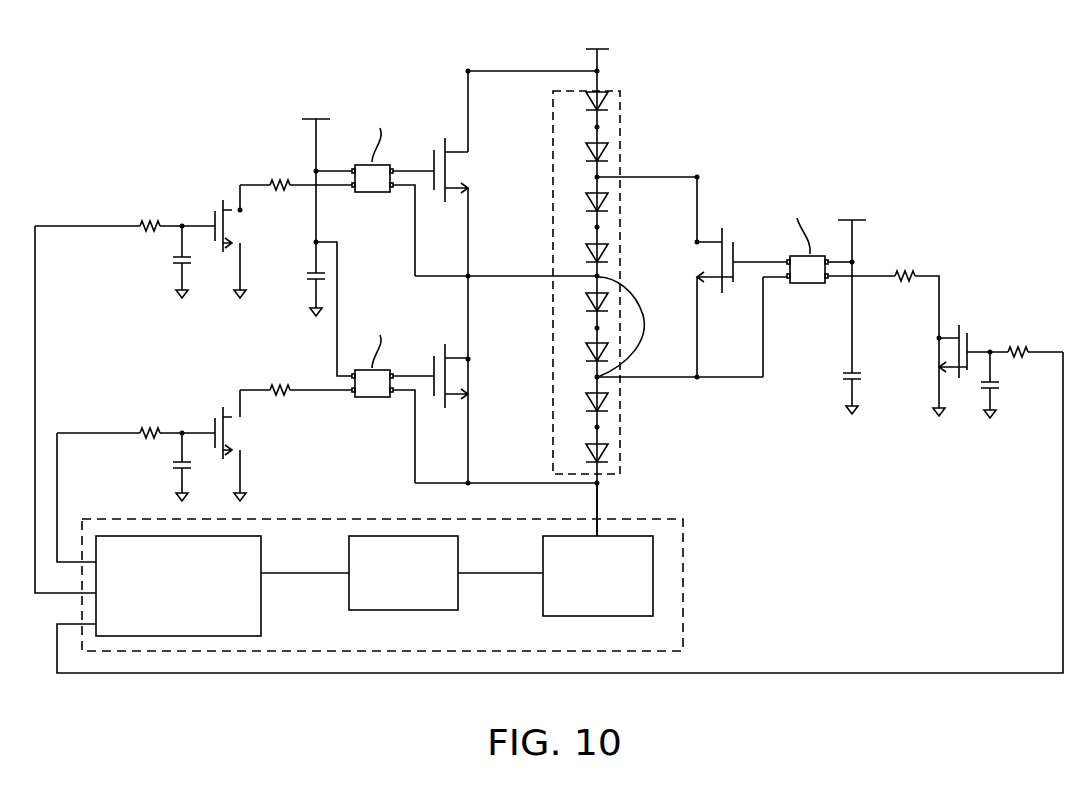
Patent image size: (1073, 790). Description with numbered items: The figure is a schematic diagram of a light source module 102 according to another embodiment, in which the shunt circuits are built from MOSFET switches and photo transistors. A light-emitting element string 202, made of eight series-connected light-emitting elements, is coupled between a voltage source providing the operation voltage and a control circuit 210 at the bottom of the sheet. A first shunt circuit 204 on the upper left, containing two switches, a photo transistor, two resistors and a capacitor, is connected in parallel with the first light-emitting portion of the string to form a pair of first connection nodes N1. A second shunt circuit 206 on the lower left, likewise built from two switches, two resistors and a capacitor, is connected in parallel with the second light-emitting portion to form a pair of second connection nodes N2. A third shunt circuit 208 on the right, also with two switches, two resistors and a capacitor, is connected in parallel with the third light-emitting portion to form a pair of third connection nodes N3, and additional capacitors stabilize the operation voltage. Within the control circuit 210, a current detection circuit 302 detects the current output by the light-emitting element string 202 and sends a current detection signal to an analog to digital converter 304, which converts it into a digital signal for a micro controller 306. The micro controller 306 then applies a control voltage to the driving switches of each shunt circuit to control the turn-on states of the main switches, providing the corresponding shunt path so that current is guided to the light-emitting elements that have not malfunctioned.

The light source module 102 is at (1031, 747).
The light-emitting element string 202 is at (552, 148).
The first shunt circuit 204 is at (179, 161).
The second shunt circuit 206 is at (190, 374).
The third shunt circuit 208 is at (947, 217).
The control circuit 210 is at (683, 560).
The current detection circuit 302 is at (597, 616).
The analog to digital converter 304 is at (403, 610).
The micro controller 306 is at (183, 636).
The first connection nodes N1 is at (598, 277).
The second connection nodes N2 is at (598, 483).
The third connection nodes N3 is at (673, 405).